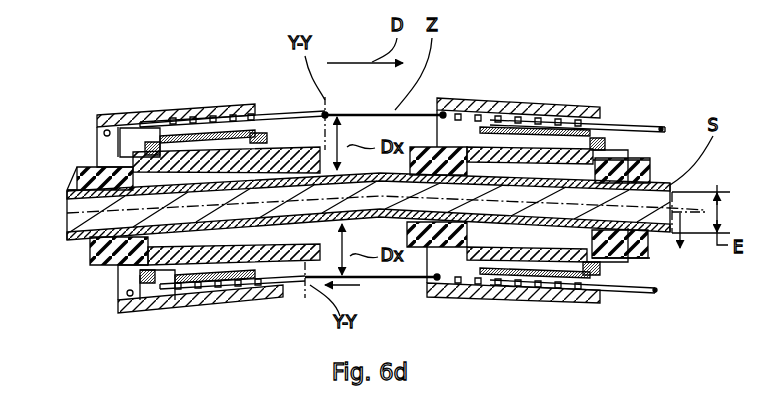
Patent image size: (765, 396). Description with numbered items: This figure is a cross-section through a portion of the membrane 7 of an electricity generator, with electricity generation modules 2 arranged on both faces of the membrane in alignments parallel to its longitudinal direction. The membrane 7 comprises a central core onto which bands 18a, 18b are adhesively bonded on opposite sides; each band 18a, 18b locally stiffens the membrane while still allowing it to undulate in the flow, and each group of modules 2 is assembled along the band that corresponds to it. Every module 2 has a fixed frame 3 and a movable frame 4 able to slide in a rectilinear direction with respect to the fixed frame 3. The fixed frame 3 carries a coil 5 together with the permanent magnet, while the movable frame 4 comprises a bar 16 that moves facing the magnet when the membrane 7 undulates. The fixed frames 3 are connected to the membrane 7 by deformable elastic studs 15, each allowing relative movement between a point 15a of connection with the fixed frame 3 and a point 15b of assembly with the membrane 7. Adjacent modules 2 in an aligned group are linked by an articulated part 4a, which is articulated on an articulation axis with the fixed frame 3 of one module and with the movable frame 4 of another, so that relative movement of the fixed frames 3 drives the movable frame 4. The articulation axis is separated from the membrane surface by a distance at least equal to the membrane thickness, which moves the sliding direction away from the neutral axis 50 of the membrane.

The electricity generation module 2 is at (187, 91).
The fixed frame 3 is at (140, 115).
The movable frame 4 is at (283, 115).
The articulated part 4a is at (443, 113).
The coil 5 is at (98, 167).
The membrane 7 is at (667, 190).
The deformable elastic stud 15 is at (77, 192).
The point of connection 15a is at (78, 182).
The point of assembly 15b is at (67, 190).
The bar 16 is at (322, 115).
The band 18a is at (70, 195).
The band 18b is at (57, 255).
The neutral axis 50 is at (690, 215).